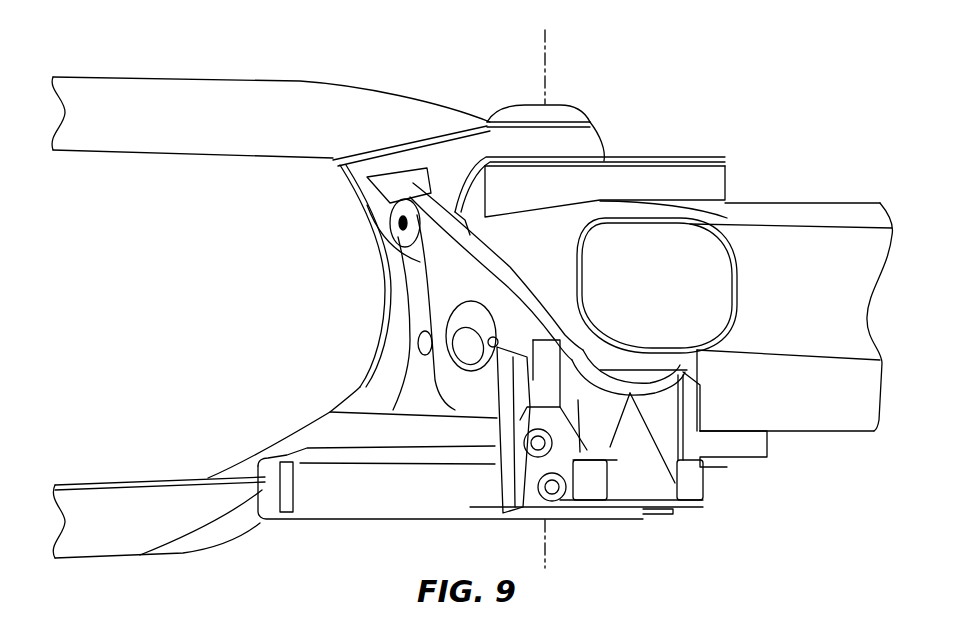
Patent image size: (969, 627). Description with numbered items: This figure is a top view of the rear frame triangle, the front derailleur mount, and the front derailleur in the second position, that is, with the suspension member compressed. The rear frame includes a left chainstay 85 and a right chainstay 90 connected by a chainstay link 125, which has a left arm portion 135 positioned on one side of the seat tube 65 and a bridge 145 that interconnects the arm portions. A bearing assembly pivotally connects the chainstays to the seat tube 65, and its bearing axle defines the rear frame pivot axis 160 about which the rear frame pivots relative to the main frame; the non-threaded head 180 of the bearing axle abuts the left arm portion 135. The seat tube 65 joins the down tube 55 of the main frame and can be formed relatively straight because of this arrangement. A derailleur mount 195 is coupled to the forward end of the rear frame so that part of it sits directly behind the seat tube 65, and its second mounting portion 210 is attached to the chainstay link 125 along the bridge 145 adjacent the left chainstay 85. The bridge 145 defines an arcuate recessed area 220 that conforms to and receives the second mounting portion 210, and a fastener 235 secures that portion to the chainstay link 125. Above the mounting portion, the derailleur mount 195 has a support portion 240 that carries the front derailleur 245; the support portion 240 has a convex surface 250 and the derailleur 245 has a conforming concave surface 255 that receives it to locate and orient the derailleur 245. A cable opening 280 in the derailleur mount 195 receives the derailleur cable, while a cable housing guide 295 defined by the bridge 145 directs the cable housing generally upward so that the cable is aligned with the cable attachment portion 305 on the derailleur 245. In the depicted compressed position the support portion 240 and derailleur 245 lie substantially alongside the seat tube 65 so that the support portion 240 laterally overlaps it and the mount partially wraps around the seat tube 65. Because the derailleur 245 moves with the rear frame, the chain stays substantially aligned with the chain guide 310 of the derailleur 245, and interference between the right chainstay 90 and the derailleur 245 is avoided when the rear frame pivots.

The left chainstay 85 is at (97, 86).
The chainstay link 125 is at (453, 148).
The bearing axle head 180 is at (563, 113).
The left arm portion 135 is at (609, 141).
The rear frame pivot axis 160 is at (553, 58).
The down tube 55 is at (790, 213).
The seat tube 65 is at (661, 217).
The bridge 145 is at (367, 374).
The recessed area 220 is at (400, 177).
The fastener 235 is at (370, 194).
The second mounting portion 210 is at (407, 259).
The derailleur mount 195 is at (507, 264).
The cable opening 280 is at (492, 337).
The cable housing guide 295 is at (417, 323).
The convex surface 250 is at (570, 353).
The support portion 240 is at (608, 384).
The concave surface 255 is at (677, 362).
The right chainstay 90 is at (83, 496).
The chain guide 310 is at (327, 518).
The cable attachment portion 305 is at (493, 390).
The front derailleur 245 is at (650, 492).